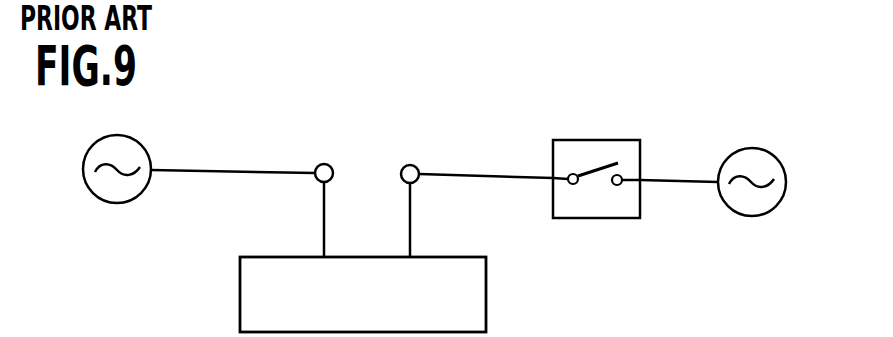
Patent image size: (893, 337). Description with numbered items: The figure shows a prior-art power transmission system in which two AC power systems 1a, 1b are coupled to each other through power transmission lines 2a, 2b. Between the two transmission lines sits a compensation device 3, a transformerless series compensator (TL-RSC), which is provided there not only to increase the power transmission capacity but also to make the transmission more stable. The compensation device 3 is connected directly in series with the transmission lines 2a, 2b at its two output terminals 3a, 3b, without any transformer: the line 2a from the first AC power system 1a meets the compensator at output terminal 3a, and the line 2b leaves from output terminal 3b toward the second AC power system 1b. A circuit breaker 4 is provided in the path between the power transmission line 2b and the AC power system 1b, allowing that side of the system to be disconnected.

The AC power system 1a is at (117, 135).
The AC power system 1b is at (736, 125).
The power transmission line 2a is at (220, 171).
The power transmission line 2b is at (508, 178).
The compensation device (TL-RSC) 3 is at (487, 297).
The output terminal 3a is at (324, 164).
The output terminal 3b is at (410, 165).
The circuit breaker 4 is at (615, 140).